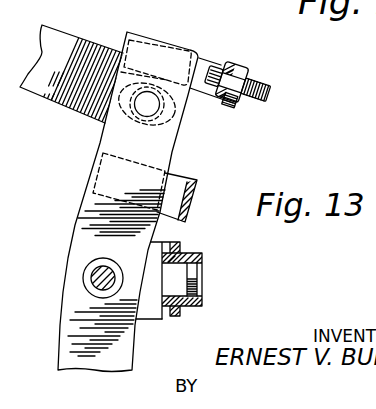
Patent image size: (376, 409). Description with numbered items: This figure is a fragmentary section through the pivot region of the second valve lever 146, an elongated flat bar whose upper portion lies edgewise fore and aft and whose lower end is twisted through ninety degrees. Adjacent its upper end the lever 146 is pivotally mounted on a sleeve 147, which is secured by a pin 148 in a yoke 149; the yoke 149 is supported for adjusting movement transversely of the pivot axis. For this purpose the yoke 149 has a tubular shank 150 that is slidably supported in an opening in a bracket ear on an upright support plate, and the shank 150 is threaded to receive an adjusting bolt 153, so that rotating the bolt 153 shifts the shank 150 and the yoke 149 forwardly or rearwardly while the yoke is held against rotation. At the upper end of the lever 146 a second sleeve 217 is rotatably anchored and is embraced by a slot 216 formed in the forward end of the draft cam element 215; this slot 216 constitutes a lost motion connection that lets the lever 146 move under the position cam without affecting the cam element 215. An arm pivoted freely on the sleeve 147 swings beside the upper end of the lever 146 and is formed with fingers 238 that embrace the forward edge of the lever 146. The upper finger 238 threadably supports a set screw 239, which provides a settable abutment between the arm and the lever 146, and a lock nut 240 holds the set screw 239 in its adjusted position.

The second valve lever 146 is at (73, 327).
The sleeve 147 is at (92, 290).
The pin 148 is at (94, 268).
The yoke 149 is at (153, 300).
The tubular shank 150 is at (201, 253).
The adjusting bolt 153 is at (199, 281).
The cam element 215 is at (64, 33).
The slot 216 is at (100, 125).
The sleeve 217 is at (178, 113).
The fingers 238 is at (224, 62).
The set screw 239 is at (270, 88).
The lock nut 240 is at (237, 106).